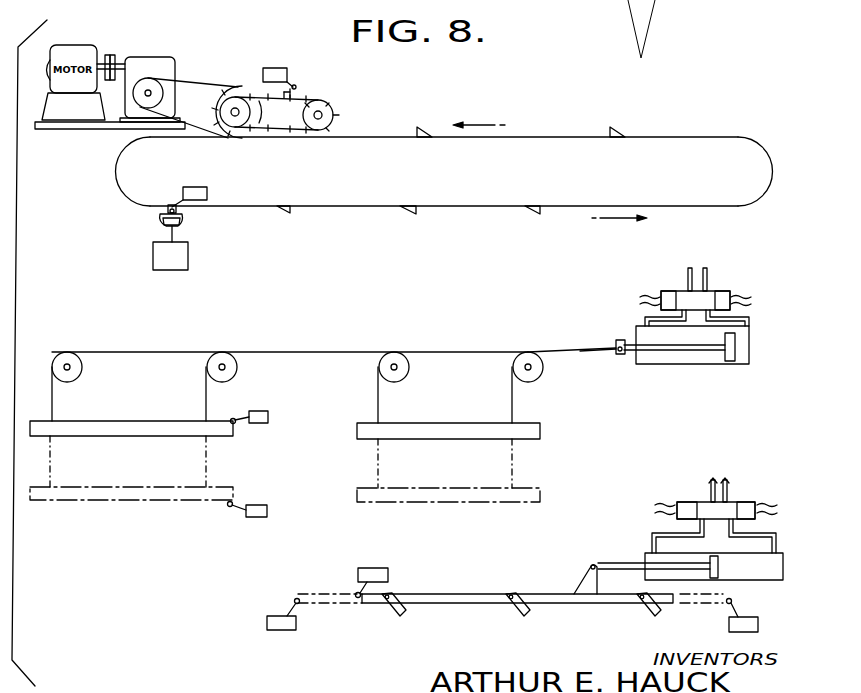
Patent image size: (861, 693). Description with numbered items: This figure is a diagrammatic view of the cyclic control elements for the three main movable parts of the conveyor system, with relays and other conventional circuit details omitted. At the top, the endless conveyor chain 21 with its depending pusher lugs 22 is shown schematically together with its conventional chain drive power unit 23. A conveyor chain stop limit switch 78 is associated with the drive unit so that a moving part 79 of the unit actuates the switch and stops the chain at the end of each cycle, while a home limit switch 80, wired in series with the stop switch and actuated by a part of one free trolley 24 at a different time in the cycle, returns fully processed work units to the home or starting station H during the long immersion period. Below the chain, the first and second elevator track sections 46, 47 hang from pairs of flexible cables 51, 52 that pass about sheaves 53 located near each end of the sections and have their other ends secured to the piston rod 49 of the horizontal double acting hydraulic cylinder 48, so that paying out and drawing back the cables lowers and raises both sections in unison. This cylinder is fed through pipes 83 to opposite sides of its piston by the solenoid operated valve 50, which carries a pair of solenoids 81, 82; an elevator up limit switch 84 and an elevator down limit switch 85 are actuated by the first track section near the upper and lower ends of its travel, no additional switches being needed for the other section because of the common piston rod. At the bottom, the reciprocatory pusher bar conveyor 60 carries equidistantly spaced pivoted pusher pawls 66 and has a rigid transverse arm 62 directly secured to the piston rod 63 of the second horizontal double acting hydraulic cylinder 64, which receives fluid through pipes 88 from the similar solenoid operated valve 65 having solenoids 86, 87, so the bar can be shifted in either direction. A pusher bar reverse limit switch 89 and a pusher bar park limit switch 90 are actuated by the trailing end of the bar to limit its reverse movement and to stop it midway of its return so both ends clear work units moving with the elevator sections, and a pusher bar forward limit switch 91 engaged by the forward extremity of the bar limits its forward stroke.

The conveyor chain 21 is at (488, 207).
The pusher lugs 22 is at (404, 208).
The chain drive power unit 23 is at (331, 108).
The free trolley 24 is at (183, 222).
The home station H is at (128, 198).
The first elevator track section 46 is at (132, 436).
The second elevator track section 47 is at (444, 439).
The hydraulic cylinder 48 is at (684, 364).
The piston rod 49 is at (660, 351).
The solenoid operated valve 50 is at (705, 296).
The flexible cables 51 is at (378, 400).
The flexible cables 52 is at (52, 400).
The sheave 53 is at (83, 370).
The pusher bar conveyor 60 is at (462, 604).
The transverse arm 62 is at (583, 575).
The piston rod 63 is at (618, 562).
The hydraulic cylinder 64 is at (765, 580).
The solenoid operated valve 65 is at (720, 508).
The pusher pawls 66 is at (392, 609).
The conveyor chain stop limit switch 78 is at (266, 69).
The moving part 79 is at (282, 93).
The home limit switch 80 is at (207, 190).
The solenoid 81 is at (668, 291).
The solenoid 82 is at (725, 295).
The pipes 83 is at (645, 320).
The elevator up limit switch 84 is at (268, 412).
The elevator down limit switch 85 is at (258, 517).
The solenoid 86 is at (688, 502).
The solenoid 87 is at (745, 510).
The pipes 88 is at (702, 537).
The pusher bar reverse limit switch 89 is at (267, 623).
The pusher bar park limit switch 90 is at (372, 567).
The pusher bar forward limit switch 91 is at (729, 626).